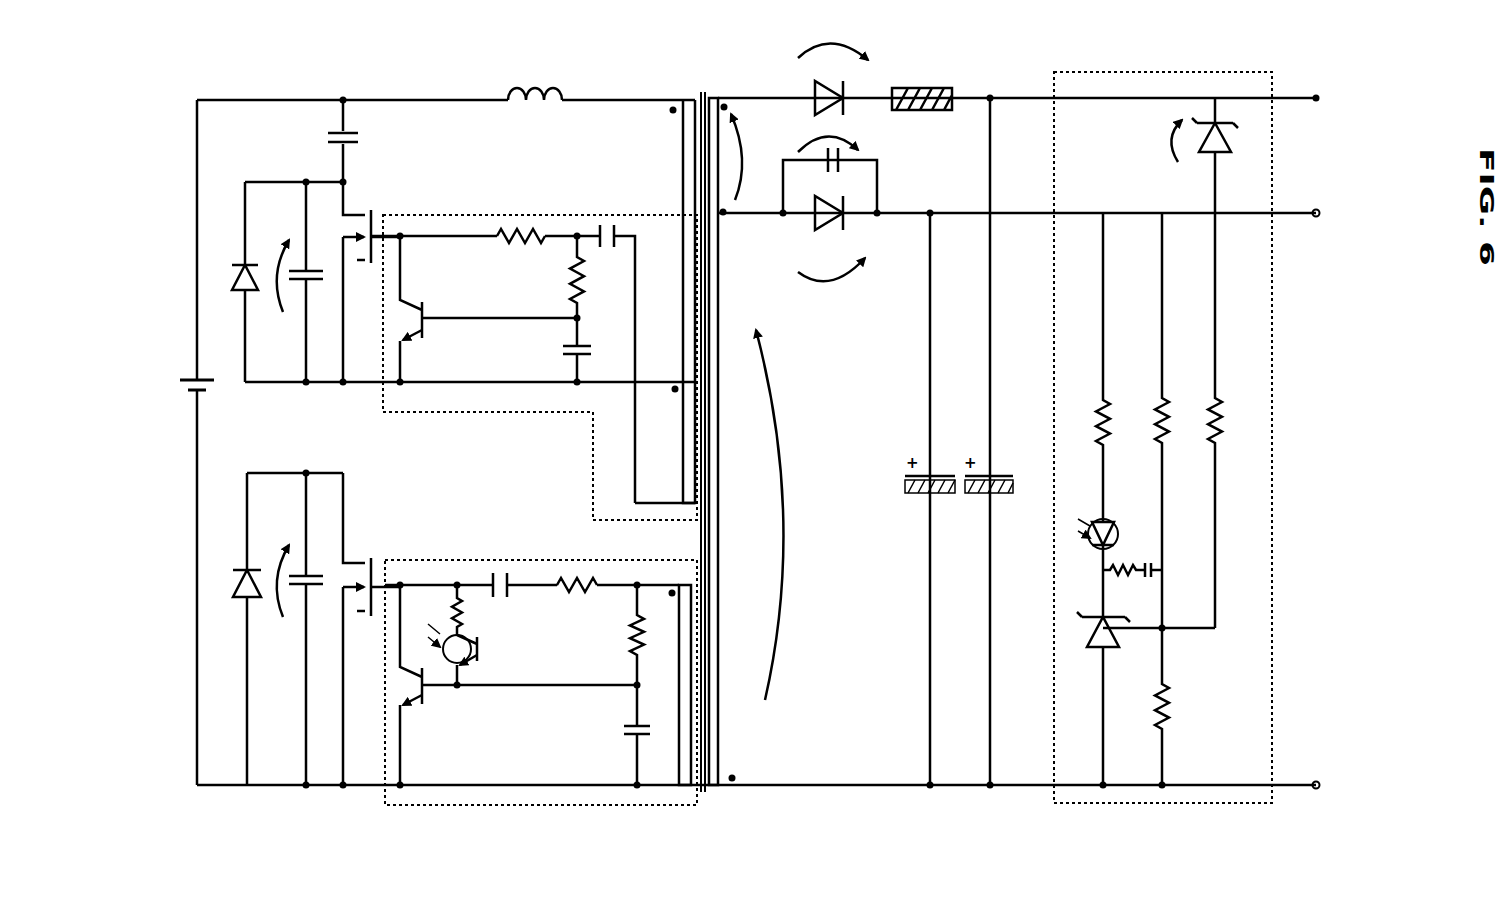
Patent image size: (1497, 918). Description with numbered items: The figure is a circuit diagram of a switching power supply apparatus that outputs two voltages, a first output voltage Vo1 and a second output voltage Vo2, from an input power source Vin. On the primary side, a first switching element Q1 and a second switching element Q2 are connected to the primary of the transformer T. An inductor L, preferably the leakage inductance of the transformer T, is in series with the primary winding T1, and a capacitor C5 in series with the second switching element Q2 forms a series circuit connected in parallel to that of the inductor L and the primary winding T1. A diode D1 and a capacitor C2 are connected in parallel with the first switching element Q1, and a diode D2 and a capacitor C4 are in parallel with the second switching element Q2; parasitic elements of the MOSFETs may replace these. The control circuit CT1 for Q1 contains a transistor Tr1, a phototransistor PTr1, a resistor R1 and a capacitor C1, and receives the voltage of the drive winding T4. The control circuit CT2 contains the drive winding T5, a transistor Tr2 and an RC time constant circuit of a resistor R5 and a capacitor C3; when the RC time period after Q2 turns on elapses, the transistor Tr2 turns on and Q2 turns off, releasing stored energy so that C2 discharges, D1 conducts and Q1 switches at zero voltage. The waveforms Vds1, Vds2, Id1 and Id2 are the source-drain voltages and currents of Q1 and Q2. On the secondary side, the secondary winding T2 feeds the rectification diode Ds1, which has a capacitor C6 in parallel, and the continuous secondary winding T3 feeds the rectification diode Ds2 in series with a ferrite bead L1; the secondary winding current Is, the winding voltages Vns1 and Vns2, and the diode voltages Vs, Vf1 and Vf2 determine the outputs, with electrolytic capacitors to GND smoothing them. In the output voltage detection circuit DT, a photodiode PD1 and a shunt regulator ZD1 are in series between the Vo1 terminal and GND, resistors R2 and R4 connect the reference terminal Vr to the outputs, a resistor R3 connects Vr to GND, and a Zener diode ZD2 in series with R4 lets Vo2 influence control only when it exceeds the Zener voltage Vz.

The input power source Vin is at (182, 371).
The inductor L is at (535, 77).
The capacitor C5 is at (326, 141).
The current flowing into the second switching element Id2 is at (356, 165).
The second switching element Q2 is at (376, 282).
The diode D2 is at (234, 282).
The source-drain voltage of the second switching element Vds2 is at (278, 261).
The capacitor C4 is at (315, 282).
The current flowing into the first switching element Id1 is at (357, 408).
The diode D1 is at (235, 629).
The source-drain voltage of the first switching element Vds1 is at (278, 563).
The capacitor C2 is at (311, 629).
The first switching element Q1 is at (370, 631).
The control circuit CT2 is at (586, 470).
The transistor Tr2 is at (487, 309).
The resistor R5 is at (555, 277).
The capacitor C3 is at (558, 352).
The control circuit CT1 is at (376, 803).
The transistor Tr1 is at (517, 685).
The phototransistor PTr1 is at (480, 635).
The resistor R1 is at (618, 635).
The capacitor C1 is at (621, 737).
The transformer T is at (698, 427).
The primary winding T1 is at (672, 301).
The drive winding T5 is at (665, 445).
The drive winding T4 is at (675, 672).
The secondary winding T3 is at (725, 427).
The secondary winding T2 is at (738, 495).
The voltage of the secondary winding T3 Vns2 is at (765, 157).
The voltage of the secondary winding T2 Vns1 is at (803, 515).
The secondary winding current Is is at (788, 770).
The second output voltage Vo2 is at (1043, 98).
The first output voltage Vo1 is at (1043, 213).
The ground GND is at (786, 785).
The rectification diode Ds2 is at (830, 84).
The voltage across the rectification diode Ds2 Vf2 is at (843, 41).
The ferrite bead L1 is at (922, 84).
The rectification diode Ds1 is at (831, 225).
The voltage across the rectification diode Ds1 Vf1 is at (831, 283).
The capacitor C6 is at (830, 182).
The voltage across the rectification diode Ds1 Vs is at (835, 136).
The output voltage detection circuit DT is at (1163, 462).
The Zener diode ZD2 is at (1237, 155).
The Zener voltage Vz is at (1159, 141).
The resistor R2 is at (1177, 420).
The resistor R4 is at (1180, 420).
The photodiode PD1 is at (1120, 540).
The shunt regulator ZD1 is at (1116, 679).
The voltage comparison terminal Vr is at (1177, 641).
The resistor R3 is at (1183, 708).